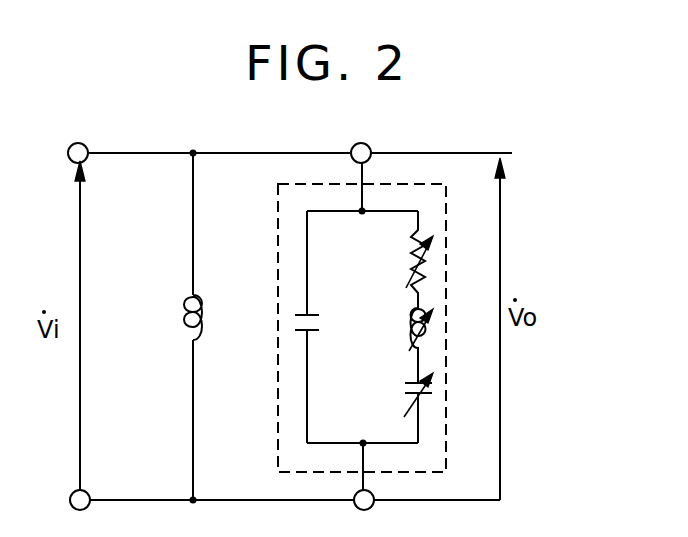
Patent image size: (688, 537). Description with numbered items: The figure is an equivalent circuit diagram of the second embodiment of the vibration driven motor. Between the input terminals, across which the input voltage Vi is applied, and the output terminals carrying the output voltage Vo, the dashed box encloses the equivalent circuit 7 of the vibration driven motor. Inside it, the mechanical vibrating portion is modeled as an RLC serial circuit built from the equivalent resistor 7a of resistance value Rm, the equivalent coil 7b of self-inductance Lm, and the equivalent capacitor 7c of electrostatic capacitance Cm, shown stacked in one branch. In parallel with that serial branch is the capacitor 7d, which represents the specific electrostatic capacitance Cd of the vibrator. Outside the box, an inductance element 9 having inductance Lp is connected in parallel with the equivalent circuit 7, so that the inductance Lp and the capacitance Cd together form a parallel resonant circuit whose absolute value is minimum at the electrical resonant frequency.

The equivalent circuit of the vibration driven motor 7 is at (412, 183).
The equivalent resistor 7a is at (432, 263).
The equivalent coil 7b is at (433, 341).
The equivalent capacitor 7c is at (434, 392).
The capacitor 7d is at (325, 333).
The inductance element 9 is at (203, 305).